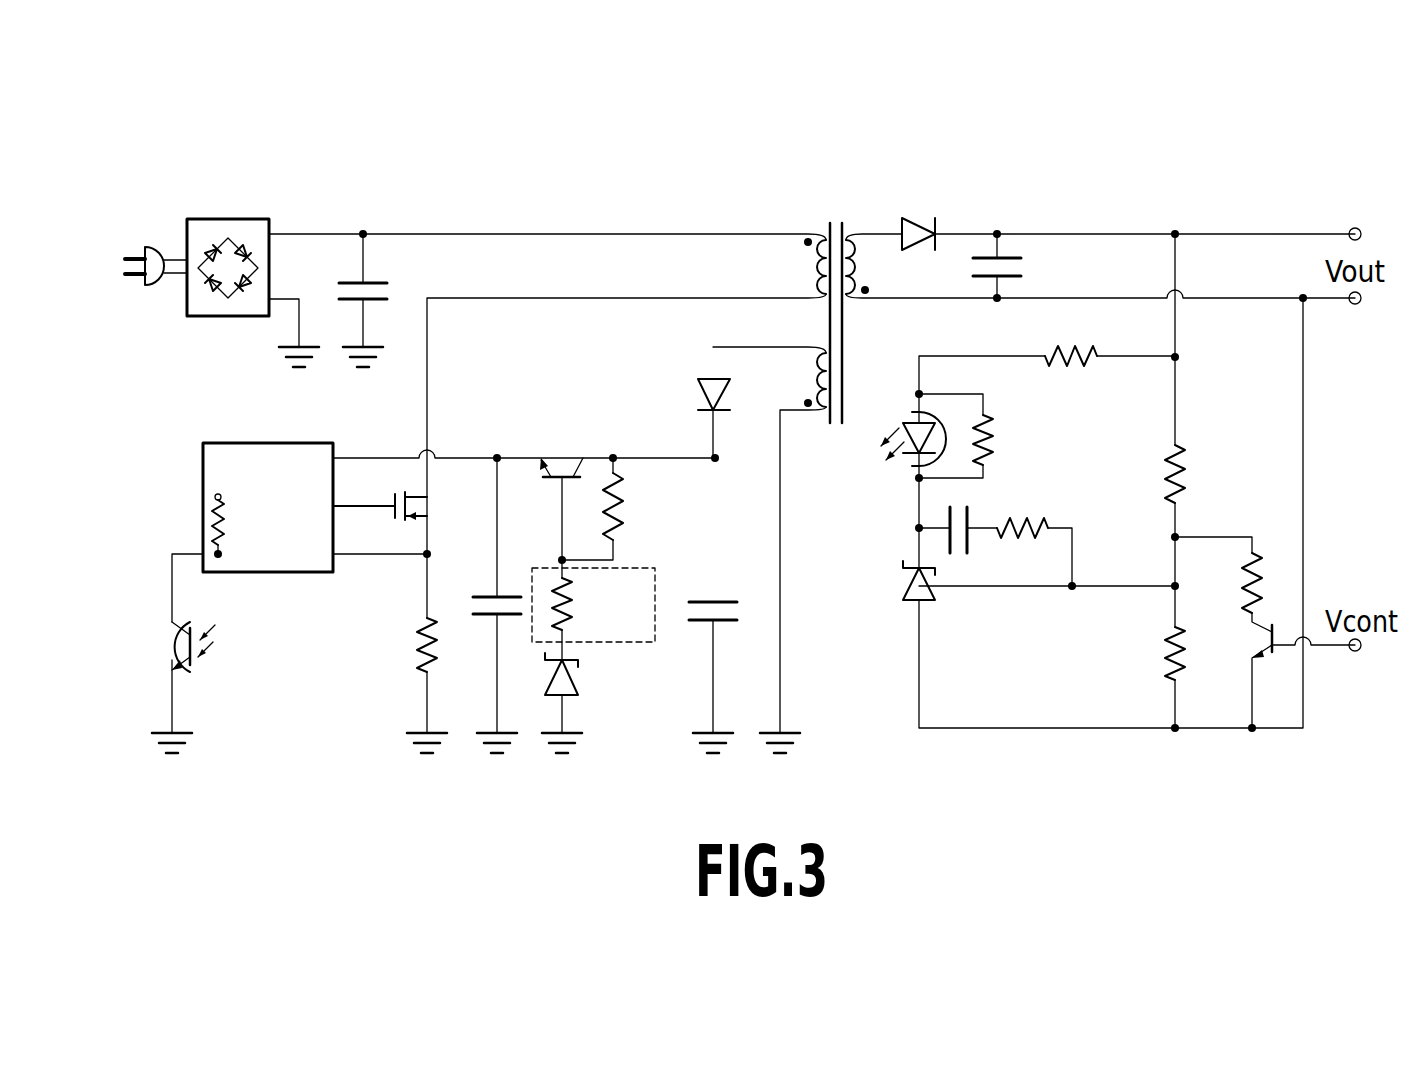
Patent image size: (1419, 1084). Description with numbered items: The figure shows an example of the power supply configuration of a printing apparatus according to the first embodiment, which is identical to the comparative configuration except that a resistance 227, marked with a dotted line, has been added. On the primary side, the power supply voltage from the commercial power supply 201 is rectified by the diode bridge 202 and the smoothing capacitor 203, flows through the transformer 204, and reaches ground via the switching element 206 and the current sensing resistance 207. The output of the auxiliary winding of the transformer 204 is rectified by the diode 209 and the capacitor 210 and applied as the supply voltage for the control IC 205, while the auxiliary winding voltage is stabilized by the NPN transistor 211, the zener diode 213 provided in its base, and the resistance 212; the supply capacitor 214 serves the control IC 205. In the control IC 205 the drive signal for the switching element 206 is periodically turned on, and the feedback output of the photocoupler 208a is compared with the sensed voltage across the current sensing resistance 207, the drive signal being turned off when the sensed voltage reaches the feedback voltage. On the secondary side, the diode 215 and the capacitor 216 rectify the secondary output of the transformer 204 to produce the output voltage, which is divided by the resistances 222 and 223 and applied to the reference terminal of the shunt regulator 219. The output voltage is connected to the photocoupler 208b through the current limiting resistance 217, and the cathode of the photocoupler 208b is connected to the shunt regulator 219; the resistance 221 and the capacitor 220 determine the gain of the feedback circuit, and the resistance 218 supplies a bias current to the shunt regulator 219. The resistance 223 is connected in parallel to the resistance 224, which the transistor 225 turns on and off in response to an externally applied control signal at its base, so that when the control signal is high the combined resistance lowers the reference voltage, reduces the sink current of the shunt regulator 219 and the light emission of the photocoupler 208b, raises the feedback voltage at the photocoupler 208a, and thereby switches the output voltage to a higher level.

The commercial power supply 201 is at (158, 247).
The diode bridge 202 is at (228, 219).
The smoothing capacitor 203 is at (378, 283).
The transformer 204 is at (842, 225).
The control IC 205 is at (240, 443).
The switching element 206 is at (400, 497).
The current sensing resistance 207 is at (418, 650).
The photocoupler 208a is at (205, 648).
The photocoupler 208b is at (905, 423).
The diode 209 is at (700, 390).
The capacitor 210 is at (705, 622).
The NPN transistor 211 is at (545, 480).
The resistance 212 is at (622, 520).
The zener diode 213 is at (578, 680).
The Vcc capacitor 214 is at (493, 597).
The diode 215 is at (915, 222).
The capacitor 216 is at (1005, 258).
The current limiting resistance 217 is at (1075, 368).
The resistance 218 is at (992, 455).
The shunt regulator 219 is at (903, 580).
The capacitor 220 is at (970, 542).
The resistance 221 is at (1038, 540).
The resistance 222 is at (1185, 455).
The resistance 223 is at (1167, 660).
The resistance 224 is at (1258, 570).
The transistor 225 is at (1265, 657).
The resistance 227 is at (570, 600).